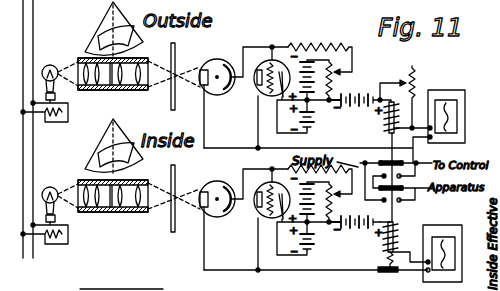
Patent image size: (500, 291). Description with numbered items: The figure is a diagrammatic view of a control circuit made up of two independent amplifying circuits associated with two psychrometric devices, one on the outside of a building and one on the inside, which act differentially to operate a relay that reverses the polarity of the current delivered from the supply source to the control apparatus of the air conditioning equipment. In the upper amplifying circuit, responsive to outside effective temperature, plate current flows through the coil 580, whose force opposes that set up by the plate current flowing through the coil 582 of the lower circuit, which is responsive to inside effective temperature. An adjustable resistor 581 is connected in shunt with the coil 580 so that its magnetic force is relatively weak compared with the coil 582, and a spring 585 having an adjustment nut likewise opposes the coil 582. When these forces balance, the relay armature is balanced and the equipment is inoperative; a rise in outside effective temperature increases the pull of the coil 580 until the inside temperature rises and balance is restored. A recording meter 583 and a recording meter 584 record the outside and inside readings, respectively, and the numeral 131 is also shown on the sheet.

The coil 580 is at (387, 125).
The adjustable resistor 581 is at (415, 77).
The coil 582 is at (422, 219).
The recording meter 583 is at (449, 90).
The recording meter 584 is at (434, 226).
The spring 585 is at (381, 256).
The figure reference 131 is at (294, 285).